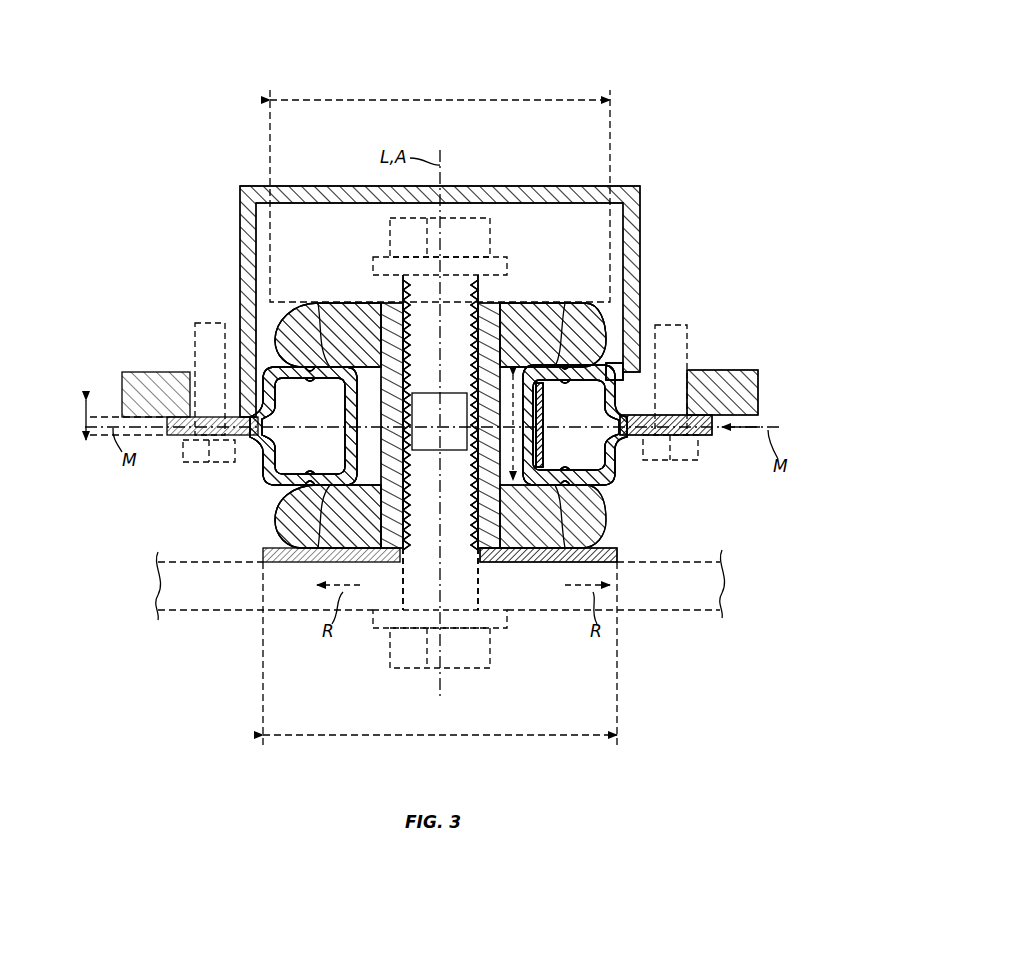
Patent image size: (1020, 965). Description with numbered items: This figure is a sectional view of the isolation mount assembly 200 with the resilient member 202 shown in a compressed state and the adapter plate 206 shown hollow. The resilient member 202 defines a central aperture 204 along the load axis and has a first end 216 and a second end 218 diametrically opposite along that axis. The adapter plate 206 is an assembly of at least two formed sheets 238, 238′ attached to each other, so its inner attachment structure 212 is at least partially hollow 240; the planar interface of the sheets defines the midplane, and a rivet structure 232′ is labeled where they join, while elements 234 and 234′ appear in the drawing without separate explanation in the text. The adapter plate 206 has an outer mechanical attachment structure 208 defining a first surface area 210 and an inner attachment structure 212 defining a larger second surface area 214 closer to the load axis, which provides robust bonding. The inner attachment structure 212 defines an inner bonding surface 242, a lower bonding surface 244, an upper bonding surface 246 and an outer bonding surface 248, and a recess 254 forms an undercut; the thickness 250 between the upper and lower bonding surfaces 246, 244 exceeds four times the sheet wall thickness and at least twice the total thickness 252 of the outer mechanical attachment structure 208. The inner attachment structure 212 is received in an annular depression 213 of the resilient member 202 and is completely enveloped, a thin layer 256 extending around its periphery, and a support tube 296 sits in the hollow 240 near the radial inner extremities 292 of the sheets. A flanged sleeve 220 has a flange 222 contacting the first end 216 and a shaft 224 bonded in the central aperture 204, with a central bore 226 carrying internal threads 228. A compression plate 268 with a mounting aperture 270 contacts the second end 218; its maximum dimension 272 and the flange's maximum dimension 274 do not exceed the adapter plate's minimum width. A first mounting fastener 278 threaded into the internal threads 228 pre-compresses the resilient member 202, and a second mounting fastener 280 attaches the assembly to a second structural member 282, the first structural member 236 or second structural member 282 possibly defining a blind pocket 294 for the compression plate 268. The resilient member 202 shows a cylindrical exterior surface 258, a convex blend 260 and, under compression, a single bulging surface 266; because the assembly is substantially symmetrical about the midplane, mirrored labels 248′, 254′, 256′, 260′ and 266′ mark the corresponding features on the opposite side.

The isolation mount assembly 200 is at (660, 50).
The resilient member 202 is at (563, 363).
The central aperture 204 is at (478, 409).
The adapter plate 206 is at (720, 433).
The outer mechanical attachment structure 208 is at (704, 410).
The first surface area 210 is at (690, 440).
The inner attachment structure 212 is at (604, 314).
The annular depression 213 is at (609, 317).
The second surface area 214 is at (590, 530).
The first end 216 is at (560, 562).
The second end 218 is at (356, 300).
The flanged sleeve 220 is at (540, 568).
The flange 222 is at (326, 561).
The shaft 224 is at (396, 300).
The central bore 226 is at (505, 490).
The internal threads 228 is at (485, 469).
The plate 232′ is at (180, 438).
The nut 234 is at (680, 463).
The nut 234′ is at (205, 465).
The first structural member 236 is at (748, 396).
The formed sheet 238 is at (270, 459).
The upper sheet 238′ is at (243, 378).
The hollow 240 is at (303, 426).
The inner bonding surface 242 is at (396, 392).
The lower bonding surface 244 is at (328, 516).
The upper bonding surface 246 is at (328, 335).
The outer bonding surface 248 is at (230, 368).
The ring neck 248′ is at (262, 452).
The thickness of the inner attachment structure 250 is at (478, 477).
The total thickness of the outer mechanical attachment structure 252 is at (88, 447).
The recess 254 is at (300, 500).
The elastomer lobe 254′ is at (283, 312).
The thin layer 256 is at (607, 480).
The bolt 256′ is at (648, 396).
The cylindrical exterior surface 258 is at (640, 412).
The convex blend 260 is at (617, 380).
The elastomer lobe 260′ is at (600, 498).
The bulging surface 266 is at (284, 340).
The elastomer lobe 266′ is at (282, 520).
The compression plate 268 is at (572, 278).
The mounting aperture 270 is at (482, 292).
The maximum dimension of the compression plate 272 is at (440, 100).
The maximum dimension of the flanged sleeve 274 is at (440, 736).
The first mounting fastener 278 is at (494, 232).
The second mounting fastener 280 is at (410, 652).
The second structural member 282 is at (680, 600).
The radial inner extremities 292 is at (535, 427).
The blind pocket 294 is at (300, 218).
The support tube 296 is at (342, 450).